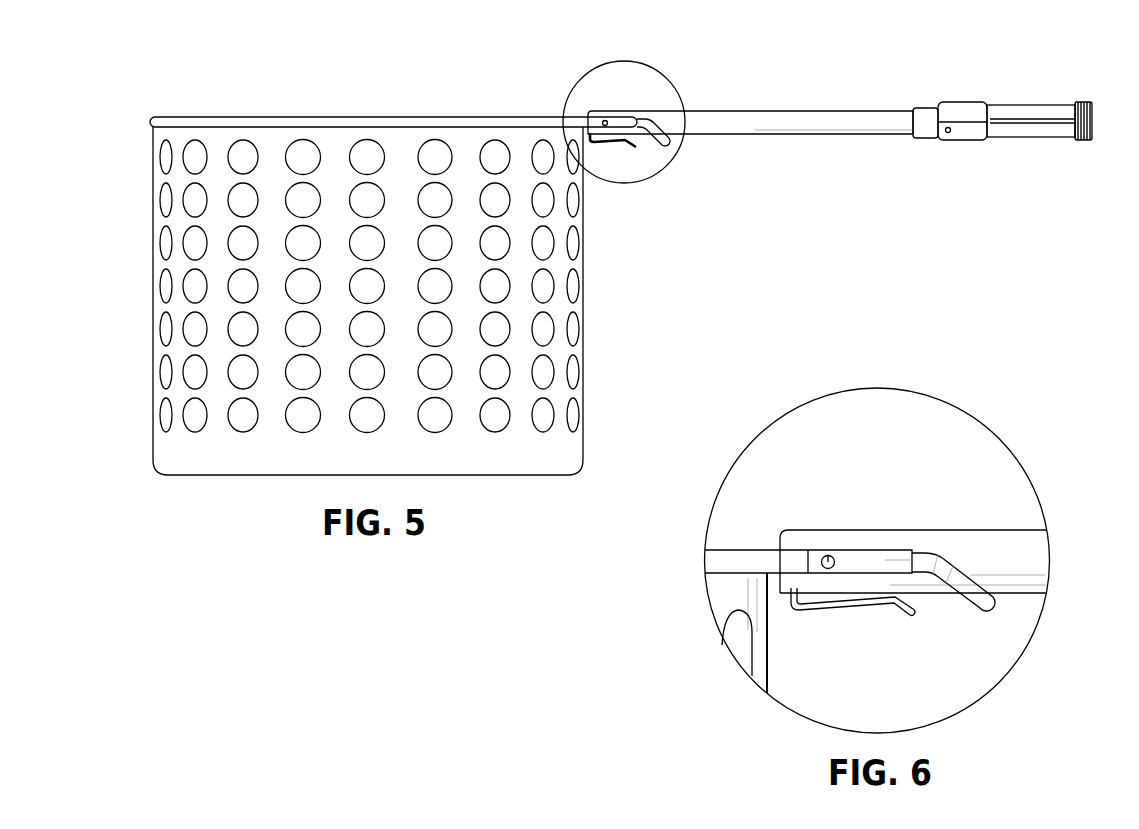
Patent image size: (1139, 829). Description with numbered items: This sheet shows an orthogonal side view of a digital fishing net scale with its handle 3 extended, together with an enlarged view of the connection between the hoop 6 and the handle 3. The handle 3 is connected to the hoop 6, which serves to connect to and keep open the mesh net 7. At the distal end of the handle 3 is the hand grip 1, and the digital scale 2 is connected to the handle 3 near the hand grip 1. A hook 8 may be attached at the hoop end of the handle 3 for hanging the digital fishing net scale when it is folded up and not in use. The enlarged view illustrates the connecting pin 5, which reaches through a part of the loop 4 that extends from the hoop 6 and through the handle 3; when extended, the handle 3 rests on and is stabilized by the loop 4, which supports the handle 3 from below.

In FIG. 5, the hand grip 1 is at (1043, 104).
In FIG. 5, the digital scale 2 is at (958, 102).
In FIG. 5, the handle 3 is at (800, 111).
In FIG. 6, the handle 3 is at (928, 530).
In FIG. 5, the loop 4 is at (665, 142).
In FIG. 6, the loop 4 is at (980, 607).
In FIG. 5, the connecting pin 5 is at (605, 120).
In FIG. 6, the connecting pin 5 is at (828, 555).
In FIG. 5, the hoop 6 is at (238, 117).
In FIG. 6, the hoop 6 is at (752, 550).
In FIG. 5, the mesh net 7 is at (556, 400).
In FIG. 5, the hook 8 is at (620, 144).
In FIG. 6, the hook 8 is at (857, 606).